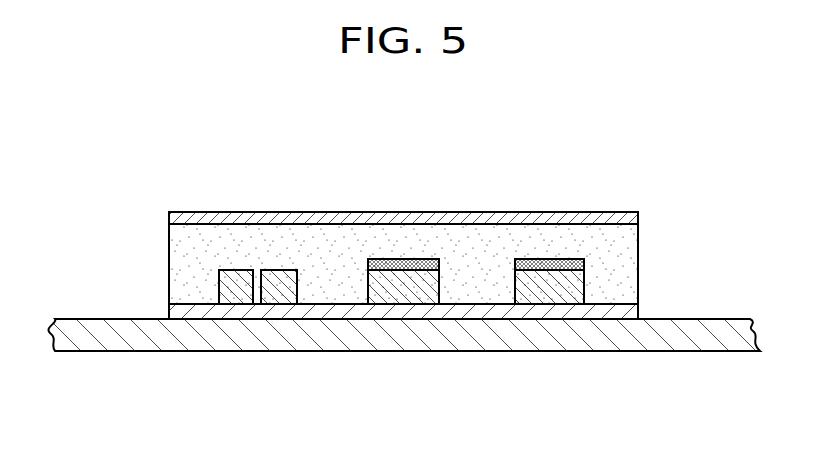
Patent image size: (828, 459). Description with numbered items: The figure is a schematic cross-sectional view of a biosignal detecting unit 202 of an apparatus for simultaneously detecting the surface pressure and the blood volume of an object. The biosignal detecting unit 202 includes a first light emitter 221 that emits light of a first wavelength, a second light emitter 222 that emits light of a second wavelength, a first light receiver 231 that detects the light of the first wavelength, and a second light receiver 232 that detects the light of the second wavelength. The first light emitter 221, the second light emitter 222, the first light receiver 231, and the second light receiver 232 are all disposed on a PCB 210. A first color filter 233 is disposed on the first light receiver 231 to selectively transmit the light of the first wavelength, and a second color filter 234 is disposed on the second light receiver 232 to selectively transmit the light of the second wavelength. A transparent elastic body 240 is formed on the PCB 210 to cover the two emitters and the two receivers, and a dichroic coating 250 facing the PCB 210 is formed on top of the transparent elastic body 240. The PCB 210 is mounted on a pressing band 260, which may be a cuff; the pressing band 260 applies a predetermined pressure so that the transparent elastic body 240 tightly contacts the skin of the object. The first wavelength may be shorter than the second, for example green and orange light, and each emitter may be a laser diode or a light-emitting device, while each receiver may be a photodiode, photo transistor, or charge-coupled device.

The biosignal detecting unit 202 is at (632, 187).
The PCB 210 is at (479, 312).
The first light emitter 221 is at (237, 298).
The second light emitter 222 is at (278, 297).
The first light receiver 231 is at (399, 297).
The second light receiver 232 is at (548, 297).
The first color filter 233 is at (405, 262).
The second color filter 234 is at (552, 262).
The transparent elastic body 240 is at (632, 266).
The dichroic coating 250 is at (630, 219).
The pressing band 260 is at (665, 342).